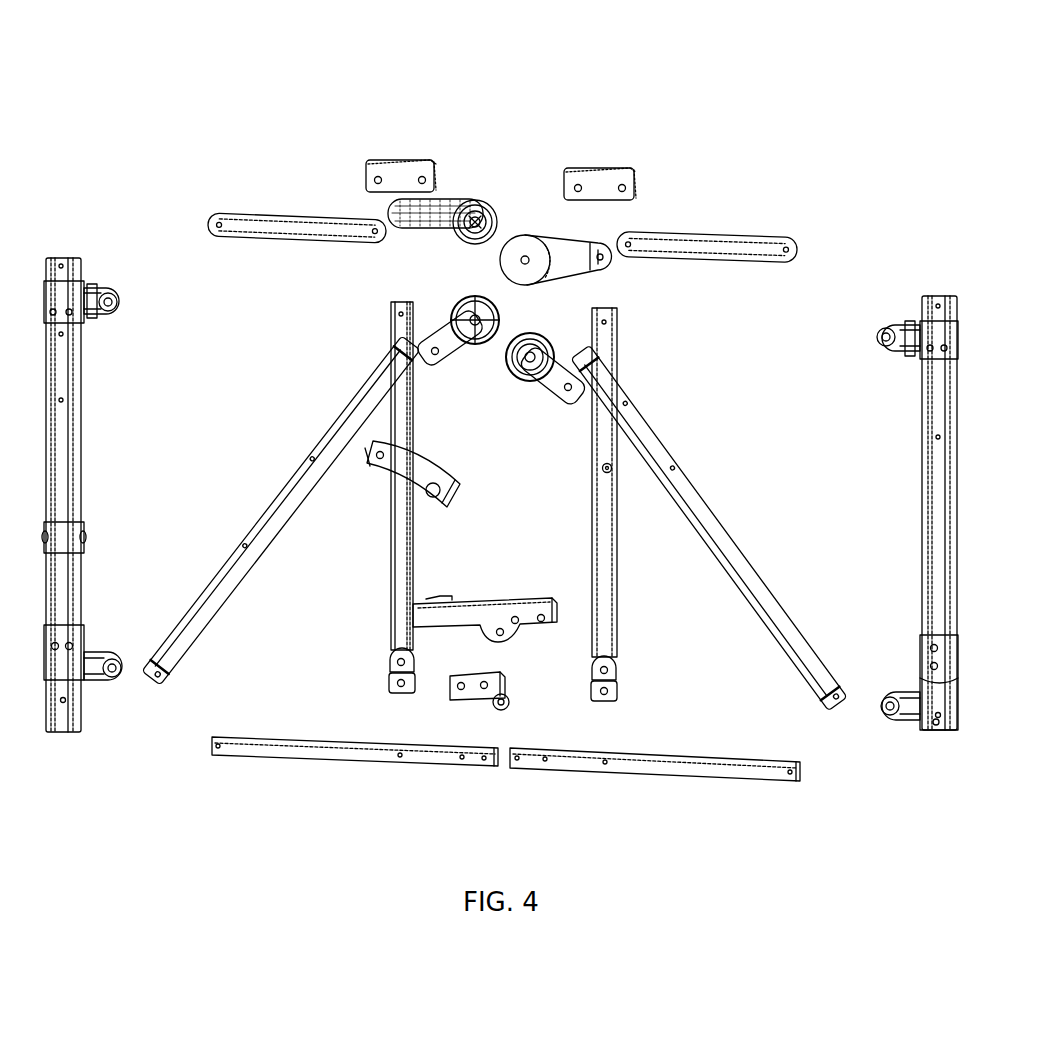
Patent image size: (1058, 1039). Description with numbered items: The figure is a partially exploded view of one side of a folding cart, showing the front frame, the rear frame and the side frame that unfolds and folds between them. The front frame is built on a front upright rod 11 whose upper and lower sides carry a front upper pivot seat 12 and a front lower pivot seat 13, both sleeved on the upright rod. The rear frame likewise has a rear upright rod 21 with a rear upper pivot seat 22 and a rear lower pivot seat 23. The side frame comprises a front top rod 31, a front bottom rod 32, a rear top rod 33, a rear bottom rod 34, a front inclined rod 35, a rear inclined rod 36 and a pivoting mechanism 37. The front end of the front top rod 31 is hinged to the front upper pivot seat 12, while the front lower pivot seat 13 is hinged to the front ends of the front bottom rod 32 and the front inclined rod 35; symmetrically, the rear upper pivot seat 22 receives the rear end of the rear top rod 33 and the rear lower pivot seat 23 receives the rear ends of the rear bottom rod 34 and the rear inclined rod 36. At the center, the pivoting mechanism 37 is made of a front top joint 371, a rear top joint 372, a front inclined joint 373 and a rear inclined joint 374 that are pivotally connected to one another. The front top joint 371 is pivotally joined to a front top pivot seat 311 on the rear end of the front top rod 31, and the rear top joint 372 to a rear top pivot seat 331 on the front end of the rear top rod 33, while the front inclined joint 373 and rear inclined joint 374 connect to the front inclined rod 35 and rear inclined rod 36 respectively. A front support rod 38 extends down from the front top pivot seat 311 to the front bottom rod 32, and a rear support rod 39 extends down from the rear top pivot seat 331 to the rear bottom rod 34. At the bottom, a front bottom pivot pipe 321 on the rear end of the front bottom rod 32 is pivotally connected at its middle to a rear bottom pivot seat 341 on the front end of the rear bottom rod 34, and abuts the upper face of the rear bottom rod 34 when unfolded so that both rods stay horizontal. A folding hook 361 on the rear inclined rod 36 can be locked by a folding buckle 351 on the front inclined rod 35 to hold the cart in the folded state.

The front upright rod 11 is at (938, 500).
The front upper pivot seat 12 is at (893, 350).
The front lower pivot seat 13 is at (890, 717).
The rear upright rod 21 is at (70, 450).
The rear upper pivot seat 22 is at (108, 289).
The rear lower pivot seat 23 is at (103, 678).
The front top rod 31 is at (727, 247).
The front top pivot seat 311 is at (637, 172).
The front bottom rod 32 is at (685, 770).
The front bottom pivot pipe 321 is at (525, 622).
The rear top rod 33 is at (278, 232).
The rear top pivot seat 331 is at (385, 178).
The rear bottom rod 34 is at (258, 748).
The rear bottom pivot seat 341 is at (455, 690).
The front inclined rod 35 is at (713, 535).
The folding buckle 351 is at (605, 472).
The rear inclined rod 36 is at (272, 514).
The folding hook 361 is at (398, 473).
The pivoting mechanism 37 is at (627, 84).
The front top joint 371 is at (537, 250).
The rear top joint 372 is at (475, 212).
The front inclined joint 373 is at (530, 350).
The rear inclined joint 374 is at (470, 308).
The front support rod 38 is at (608, 583).
The rear support rod 39 is at (398, 580).